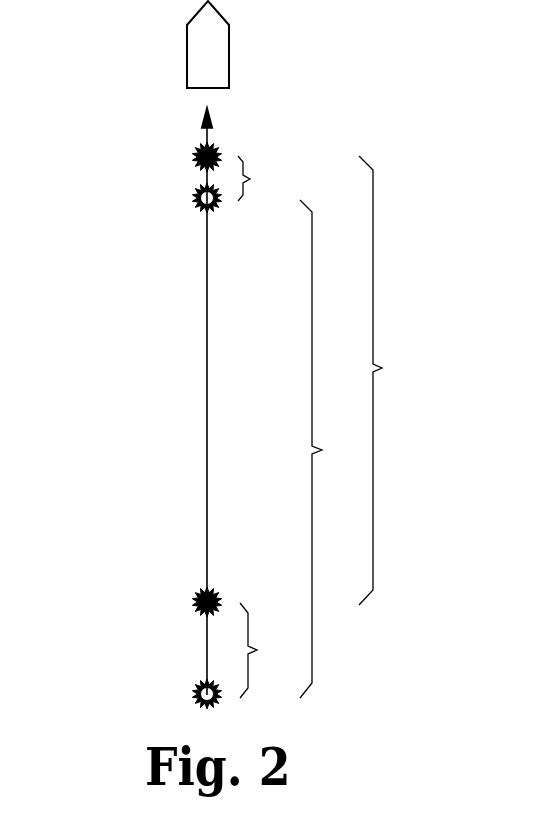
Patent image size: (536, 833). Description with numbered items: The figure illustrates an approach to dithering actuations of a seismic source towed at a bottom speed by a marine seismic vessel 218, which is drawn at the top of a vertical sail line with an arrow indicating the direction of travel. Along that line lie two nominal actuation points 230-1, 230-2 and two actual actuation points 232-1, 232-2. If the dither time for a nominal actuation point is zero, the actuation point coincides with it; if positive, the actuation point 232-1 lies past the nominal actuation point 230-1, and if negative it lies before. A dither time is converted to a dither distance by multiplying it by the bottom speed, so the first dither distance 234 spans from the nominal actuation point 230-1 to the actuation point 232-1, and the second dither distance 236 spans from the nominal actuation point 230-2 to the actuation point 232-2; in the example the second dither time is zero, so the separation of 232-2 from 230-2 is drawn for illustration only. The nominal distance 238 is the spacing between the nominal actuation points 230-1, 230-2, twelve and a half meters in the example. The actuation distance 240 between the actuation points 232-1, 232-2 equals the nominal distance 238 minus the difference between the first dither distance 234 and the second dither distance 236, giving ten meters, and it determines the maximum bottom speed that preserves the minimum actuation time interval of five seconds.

The marine seismic vessel 218 is at (187, 48).
The nominal actuation point 230-1 is at (186, 666).
The actuation point 232-1 is at (186, 571).
The nominal actuation point 230-2 is at (184, 221).
The actuation point 232-2 is at (180, 172).
The first dither distance 234 is at (266, 650).
The second dither distance 236 is at (265, 178).
The nominal distance 238 is at (329, 449).
The actuation distance 240 is at (388, 380).